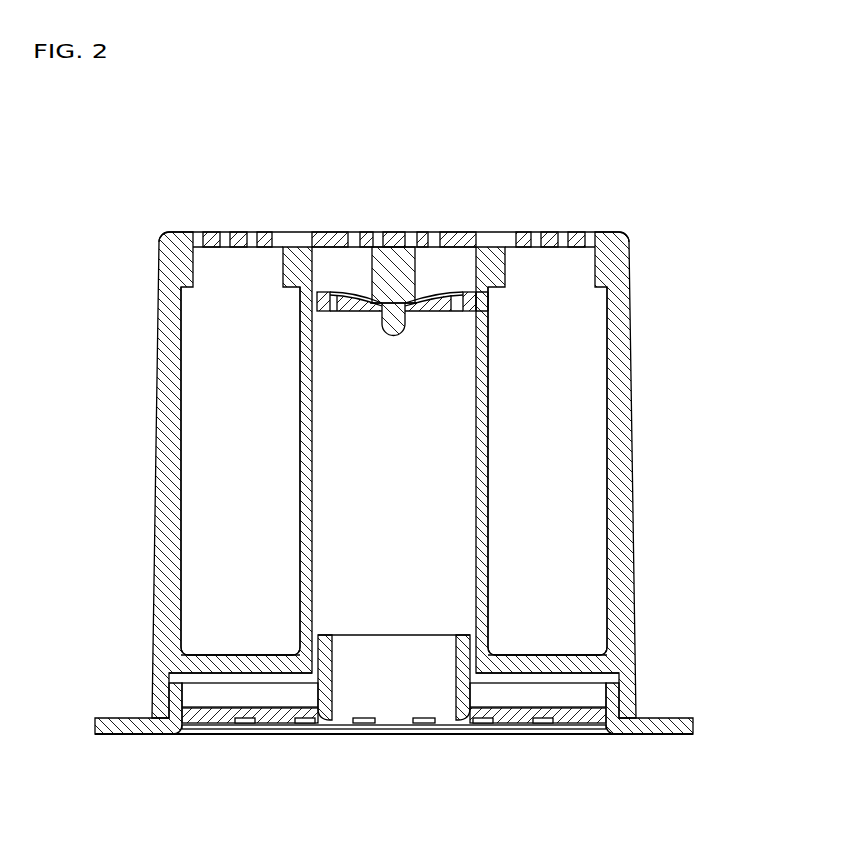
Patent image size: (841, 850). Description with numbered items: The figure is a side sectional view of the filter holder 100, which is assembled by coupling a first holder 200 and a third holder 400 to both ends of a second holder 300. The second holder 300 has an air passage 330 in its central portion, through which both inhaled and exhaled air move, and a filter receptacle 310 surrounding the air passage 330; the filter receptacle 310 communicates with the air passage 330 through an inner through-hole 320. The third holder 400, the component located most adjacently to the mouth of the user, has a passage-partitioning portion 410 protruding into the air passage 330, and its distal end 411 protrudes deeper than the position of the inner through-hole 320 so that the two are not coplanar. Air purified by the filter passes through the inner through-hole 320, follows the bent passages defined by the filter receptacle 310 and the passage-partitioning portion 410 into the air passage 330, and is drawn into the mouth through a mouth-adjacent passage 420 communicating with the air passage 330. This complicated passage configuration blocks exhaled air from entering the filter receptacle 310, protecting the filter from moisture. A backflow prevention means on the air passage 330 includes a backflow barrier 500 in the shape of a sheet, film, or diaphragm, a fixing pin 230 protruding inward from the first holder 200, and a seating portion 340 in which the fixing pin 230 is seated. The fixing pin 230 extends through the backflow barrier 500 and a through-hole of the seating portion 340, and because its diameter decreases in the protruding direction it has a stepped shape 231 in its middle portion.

The filter holder 100 is at (153, 165).
The first holder 200 is at (157, 240).
The fixing pin 230 is at (415, 267).
The stepped shape 231 is at (410, 308).
The second holder 300 is at (157, 323).
The filter receptacle 310 is at (240, 502).
The inner through-hole 320 is at (257, 663).
The air passage 330 is at (410, 470).
The seating portion 340 is at (488, 303).
The third holder 400 is at (185, 742).
The passage-partitioning portion 410 is at (470, 692).
The distal end 411 is at (362, 635).
The mouth-adjacent passage 420 is at (405, 663).
The backflow barrier 500 is at (349, 290).